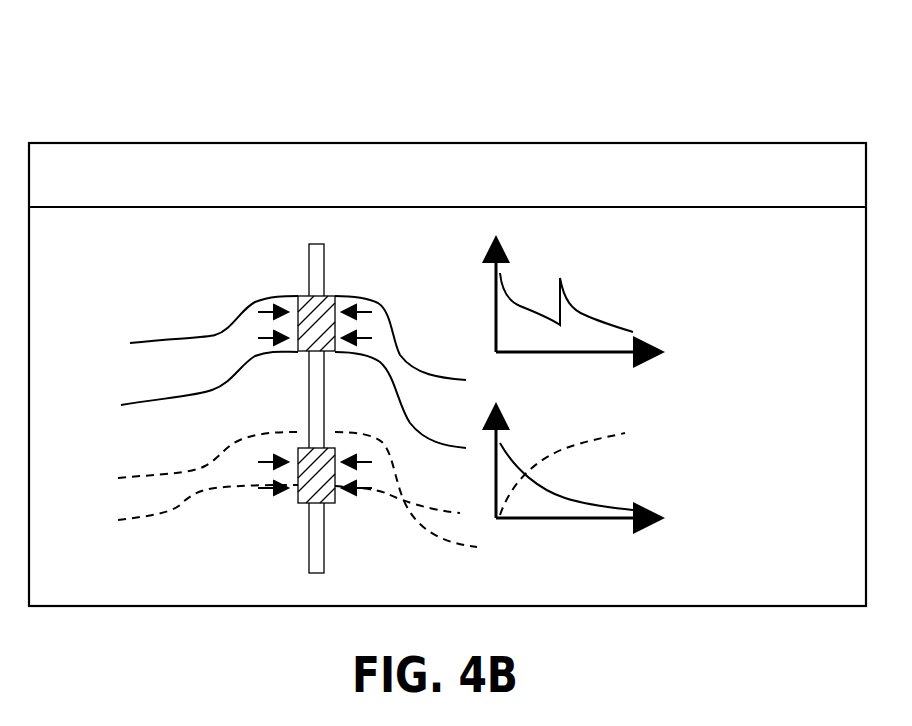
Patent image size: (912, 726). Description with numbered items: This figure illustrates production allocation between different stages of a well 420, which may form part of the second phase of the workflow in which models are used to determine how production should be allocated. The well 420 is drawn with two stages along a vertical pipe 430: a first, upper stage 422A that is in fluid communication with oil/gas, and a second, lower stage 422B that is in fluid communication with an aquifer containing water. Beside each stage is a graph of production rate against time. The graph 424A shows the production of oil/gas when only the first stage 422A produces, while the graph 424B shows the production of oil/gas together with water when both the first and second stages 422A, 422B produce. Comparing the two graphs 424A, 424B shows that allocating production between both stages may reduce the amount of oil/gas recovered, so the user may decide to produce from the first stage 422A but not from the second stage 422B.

The well 420 is at (658, 63).
The wellbore / pipe 430 is at (309, 247).
The first stage 422A is at (318, 322).
The second stage 422B is at (315, 478).
The graph 424A is at (643, 293).
The graph 424B is at (643, 465).